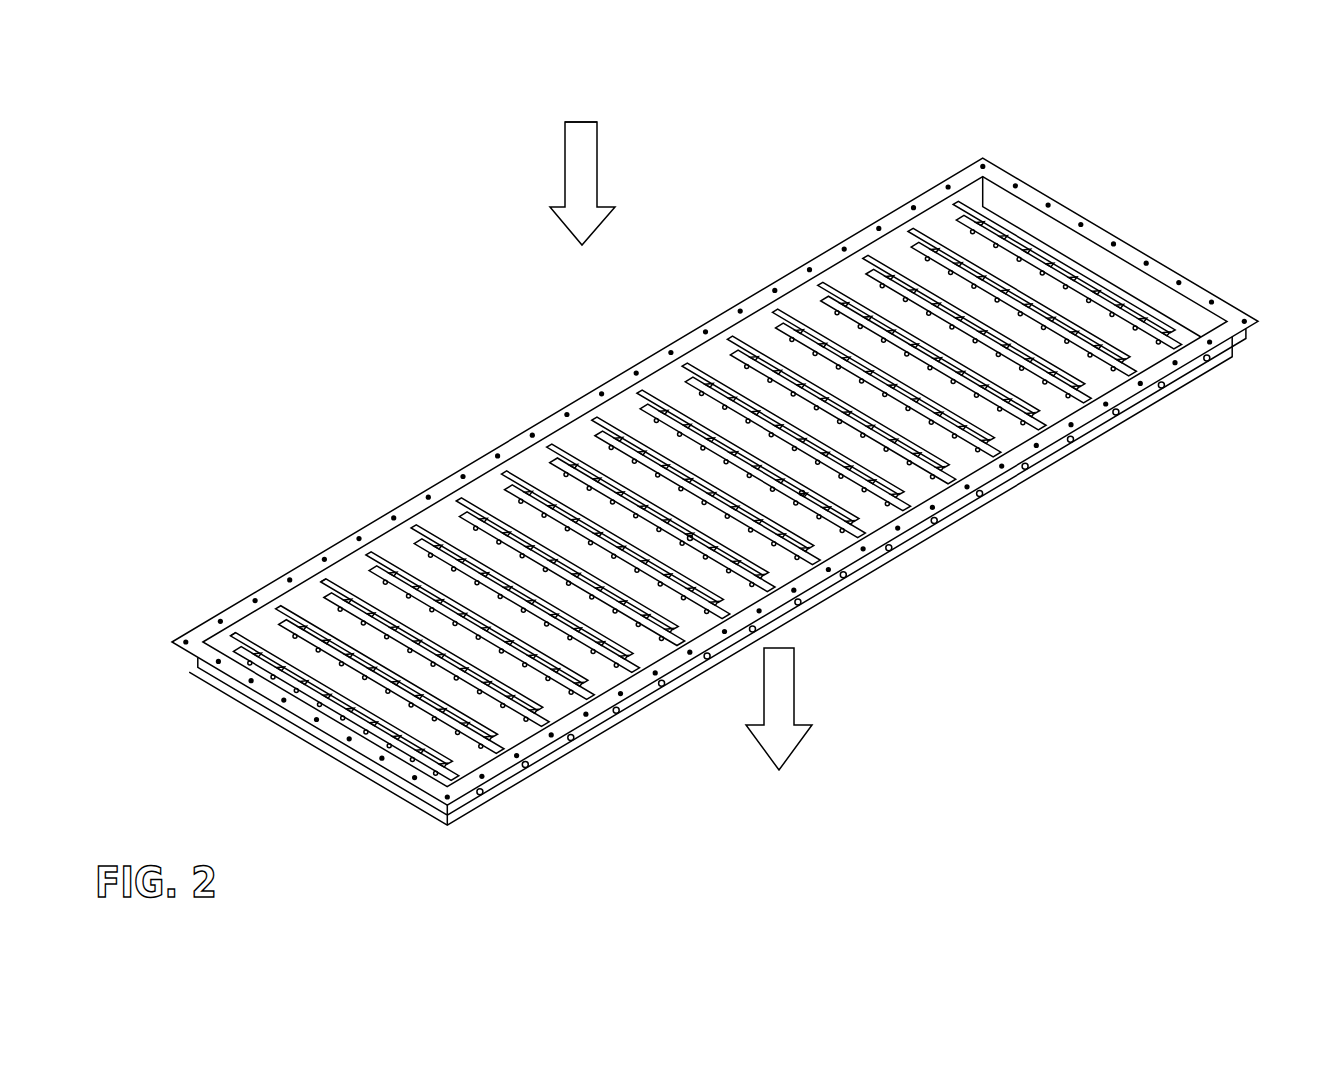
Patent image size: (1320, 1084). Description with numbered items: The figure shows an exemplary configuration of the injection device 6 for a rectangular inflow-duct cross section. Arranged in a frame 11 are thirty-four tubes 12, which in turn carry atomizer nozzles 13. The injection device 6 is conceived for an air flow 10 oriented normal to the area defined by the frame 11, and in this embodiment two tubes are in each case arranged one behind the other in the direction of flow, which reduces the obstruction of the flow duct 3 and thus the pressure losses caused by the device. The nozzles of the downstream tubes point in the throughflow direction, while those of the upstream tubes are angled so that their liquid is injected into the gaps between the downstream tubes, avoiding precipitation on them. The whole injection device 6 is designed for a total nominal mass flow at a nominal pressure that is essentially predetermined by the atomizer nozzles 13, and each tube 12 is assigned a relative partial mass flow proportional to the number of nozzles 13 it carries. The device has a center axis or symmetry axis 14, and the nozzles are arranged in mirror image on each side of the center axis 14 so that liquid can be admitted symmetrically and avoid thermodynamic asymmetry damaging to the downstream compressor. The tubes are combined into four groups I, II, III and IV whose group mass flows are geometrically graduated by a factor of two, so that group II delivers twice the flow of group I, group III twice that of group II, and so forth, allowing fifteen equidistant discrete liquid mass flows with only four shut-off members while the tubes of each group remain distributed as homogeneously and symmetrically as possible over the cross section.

The flow duct 3 is at (524, 190).
The injection device 6 is at (1096, 478).
The air flow 10 is at (590, 168).
The frame 11 is at (1205, 368).
The tubes 12 is at (680, 479).
The atomizer nozzles 13 is at (802, 493).
The center axis 14 is at (553, 402).
The group I is at (977, 214).
The group II is at (825, 204).
The group III is at (337, 587).
The group IV is at (200, 538).